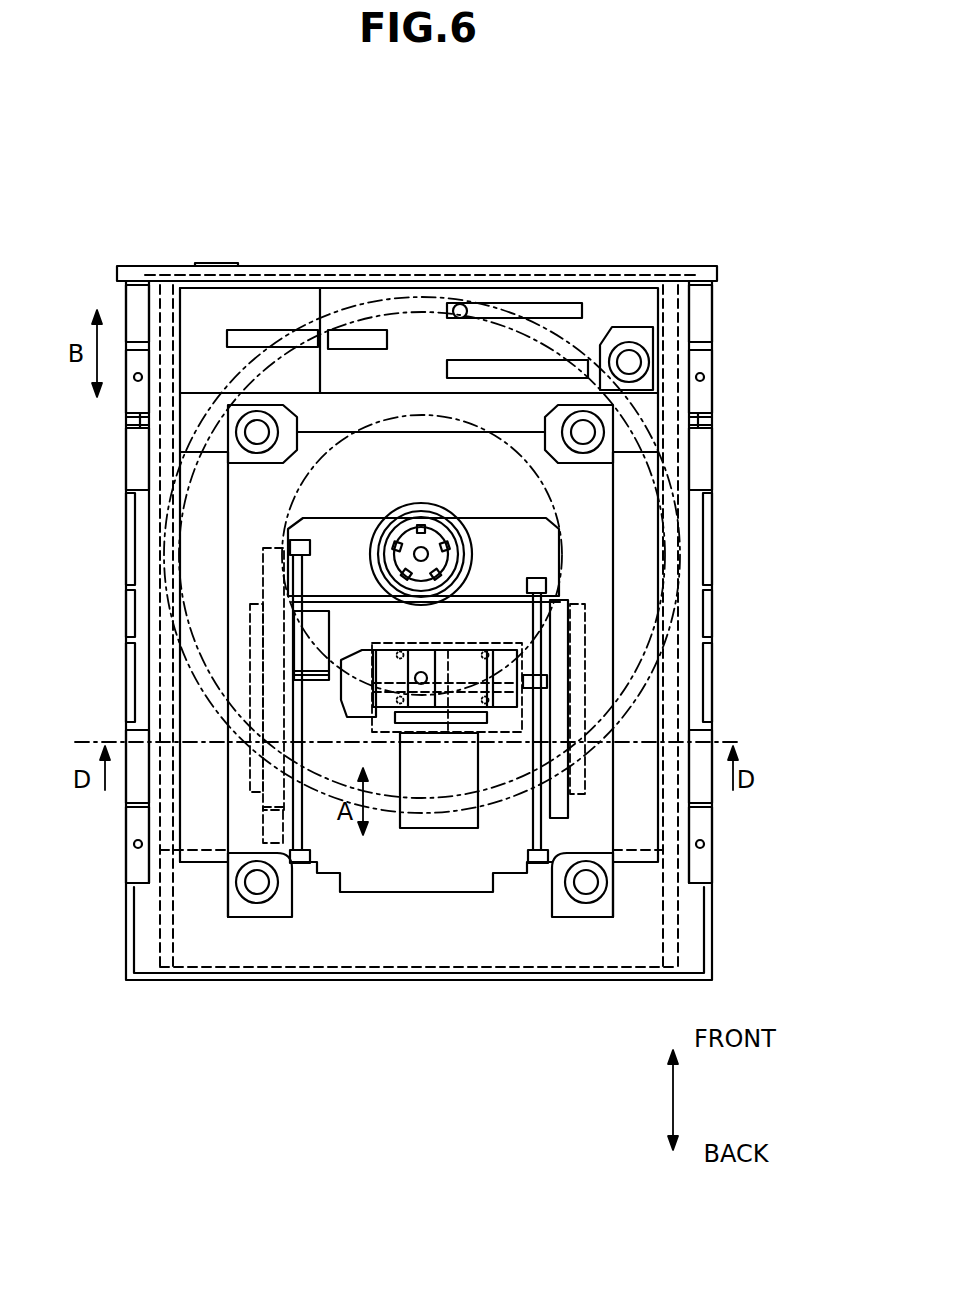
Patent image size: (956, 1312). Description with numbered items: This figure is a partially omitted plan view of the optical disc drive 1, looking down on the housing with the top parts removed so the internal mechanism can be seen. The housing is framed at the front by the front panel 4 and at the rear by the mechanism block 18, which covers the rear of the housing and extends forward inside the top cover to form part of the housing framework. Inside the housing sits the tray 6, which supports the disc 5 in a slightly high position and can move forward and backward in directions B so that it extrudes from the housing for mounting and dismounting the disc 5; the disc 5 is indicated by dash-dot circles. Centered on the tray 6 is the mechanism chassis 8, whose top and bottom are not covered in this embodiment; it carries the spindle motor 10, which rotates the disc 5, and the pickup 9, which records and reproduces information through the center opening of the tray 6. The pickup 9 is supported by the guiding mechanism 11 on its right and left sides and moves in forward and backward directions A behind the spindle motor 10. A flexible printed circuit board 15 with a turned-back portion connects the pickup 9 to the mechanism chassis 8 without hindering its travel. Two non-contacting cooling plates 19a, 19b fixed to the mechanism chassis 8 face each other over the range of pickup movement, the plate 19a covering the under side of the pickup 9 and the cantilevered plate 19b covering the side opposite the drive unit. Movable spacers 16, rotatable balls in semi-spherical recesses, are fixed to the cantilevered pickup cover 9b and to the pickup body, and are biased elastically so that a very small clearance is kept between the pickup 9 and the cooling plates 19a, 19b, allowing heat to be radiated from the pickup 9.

The optical disc drive 1 is at (380, 177).
The front panel 4 is at (184, 272).
The disc 5 is at (177, 492).
The tray 6 is at (163, 912).
The mechanism chassis 8 is at (540, 547).
The pickup 9 is at (347, 630).
The pickup cover 9b is at (330, 640).
The spindle motor 10 is at (434, 537).
The guiding mechanism 11 is at (330, 597).
The flexible printed circuit board 15 is at (415, 805).
The movable spacers 16 is at (485, 653).
The mechanism block 18 is at (697, 780).
The non-contacting cooling plate 19a is at (523, 682).
The non-contacting cooling plate 19b is at (551, 818).